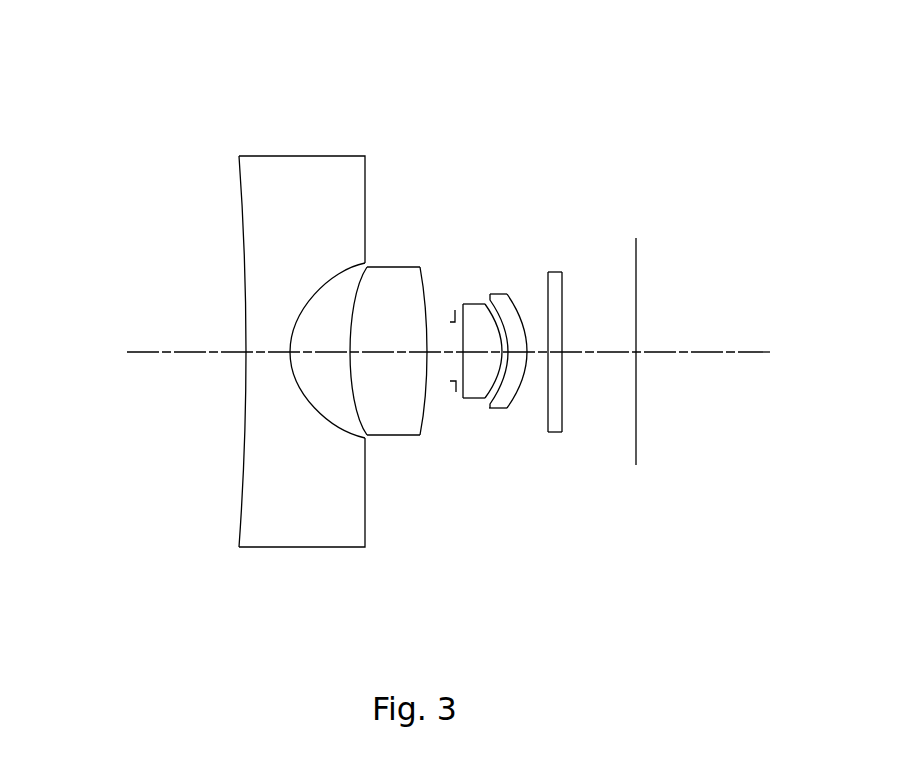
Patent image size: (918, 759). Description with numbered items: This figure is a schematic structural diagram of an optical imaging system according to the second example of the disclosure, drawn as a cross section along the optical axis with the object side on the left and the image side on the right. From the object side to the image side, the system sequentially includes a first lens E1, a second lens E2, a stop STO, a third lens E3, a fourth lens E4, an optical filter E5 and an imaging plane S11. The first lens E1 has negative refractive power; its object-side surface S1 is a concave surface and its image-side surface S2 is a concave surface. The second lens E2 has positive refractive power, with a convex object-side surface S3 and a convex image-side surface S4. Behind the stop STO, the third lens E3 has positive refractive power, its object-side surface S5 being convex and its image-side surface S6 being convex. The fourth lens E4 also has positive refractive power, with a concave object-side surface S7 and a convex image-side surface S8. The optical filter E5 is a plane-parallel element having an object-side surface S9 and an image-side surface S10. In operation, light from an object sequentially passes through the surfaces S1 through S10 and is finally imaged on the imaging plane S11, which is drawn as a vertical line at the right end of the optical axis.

The first lens E1 is at (208, 335).
The second lens E2 is at (304, 335).
The stop STO is at (455, 310).
The third lens E3 is at (407, 335).
The fourth lens E4 is at (508, 335).
The optical filter E5 is at (619, 335).
The object-side surface of the first lens S1 is at (247, 352).
The image-side surface of the first lens S2 is at (290, 352).
The object-side surface of the second lens S3 is at (350, 352).
The image-side surface of the second lens S4 is at (427, 352).
The object-side surface of the third lens S5 is at (463, 352).
The image-side surface of the third lens S6 is at (502, 352).
The object-side surface of the fourth lens S7 is at (508, 352).
The image-side surface of the fourth lens S8 is at (527, 352).
The object-side surface of the optical filter S9 is at (548, 352).
The image-side surface of the optical filter S10 is at (562, 352).
The imaging plane S11 is at (636, 352).